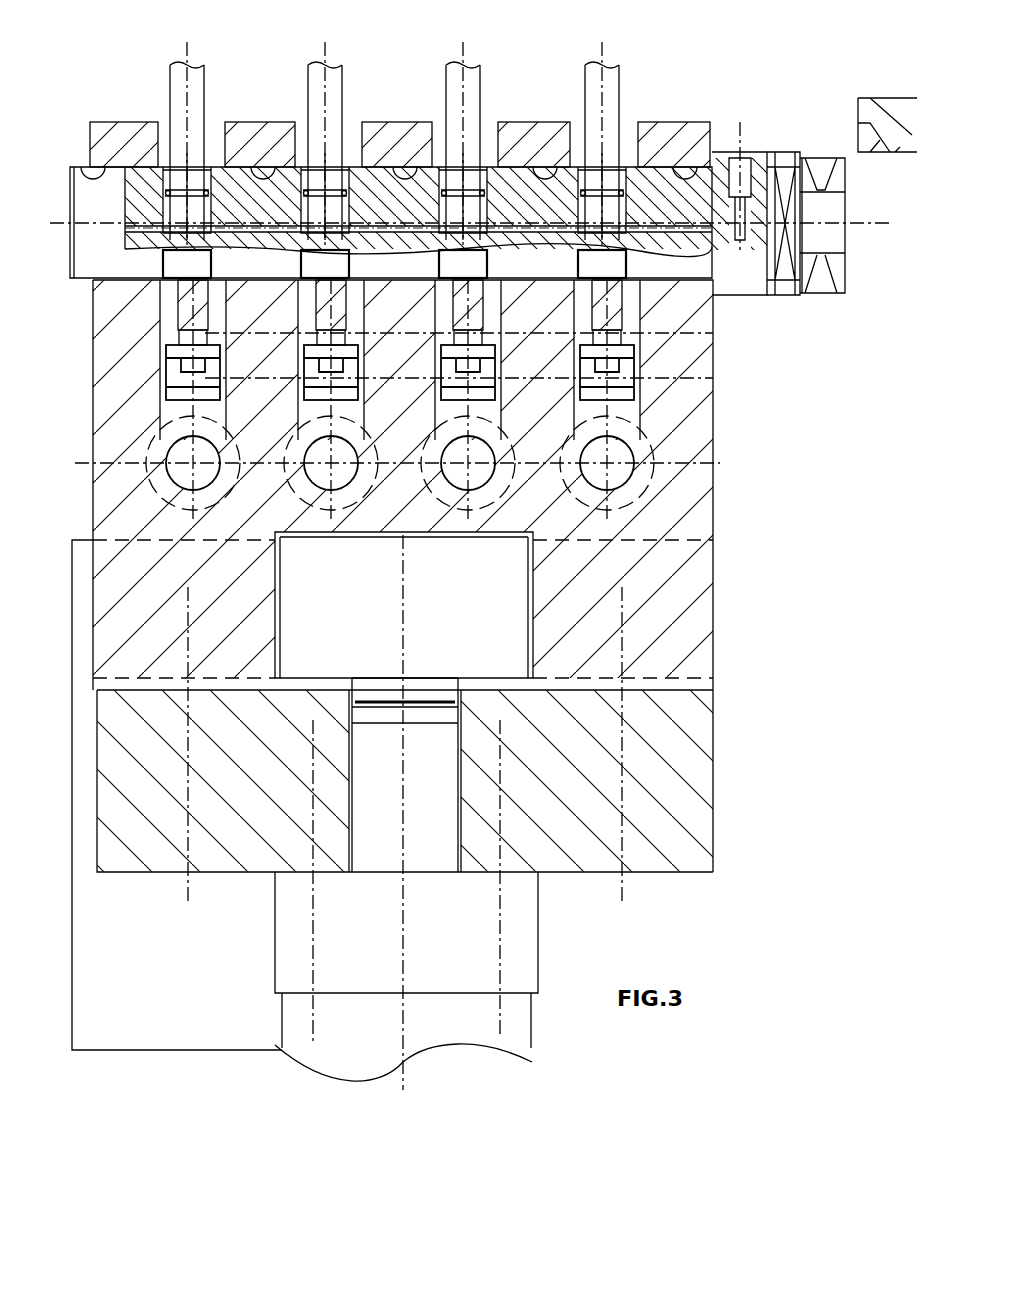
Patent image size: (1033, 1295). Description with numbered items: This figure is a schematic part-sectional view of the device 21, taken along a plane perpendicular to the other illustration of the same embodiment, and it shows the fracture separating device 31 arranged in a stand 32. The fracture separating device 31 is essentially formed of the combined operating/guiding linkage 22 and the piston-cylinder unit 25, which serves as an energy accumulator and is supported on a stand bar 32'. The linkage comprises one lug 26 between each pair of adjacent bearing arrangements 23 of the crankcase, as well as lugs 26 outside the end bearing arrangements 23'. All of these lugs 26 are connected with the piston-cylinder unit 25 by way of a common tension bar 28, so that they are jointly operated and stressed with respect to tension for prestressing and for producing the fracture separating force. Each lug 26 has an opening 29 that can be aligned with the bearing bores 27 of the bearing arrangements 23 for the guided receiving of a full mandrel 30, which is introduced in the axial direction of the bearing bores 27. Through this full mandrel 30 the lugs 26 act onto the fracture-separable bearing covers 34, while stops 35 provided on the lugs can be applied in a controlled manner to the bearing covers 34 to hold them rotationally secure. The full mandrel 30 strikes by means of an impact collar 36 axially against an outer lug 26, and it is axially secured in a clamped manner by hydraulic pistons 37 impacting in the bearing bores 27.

The device 21 is at (782, 397).
The combined operating/guiding linkage 22 is at (97, 820).
The bearing arrangements 23 is at (394, 134).
The end bearing arrangements 23' is at (396, 134).
The piston-cylinder unit 25 is at (381, 970).
The lug 26 is at (120, 140).
The bearing bores 27 is at (207, 174).
The common tension bar 28 is at (713, 568).
The openings 29 is at (82, 167).
The full mandrel 30 is at (105, 266).
The fracture separating device 31 is at (93, 405).
The stand 32 is at (177, 795).
The stand bar 32' is at (404, 605).
The bearing covers 34 is at (323, 307).
The stops 35 is at (294, 392).
The impact collar 36 is at (740, 281).
The hydraulic pistons 37 is at (180, 238).